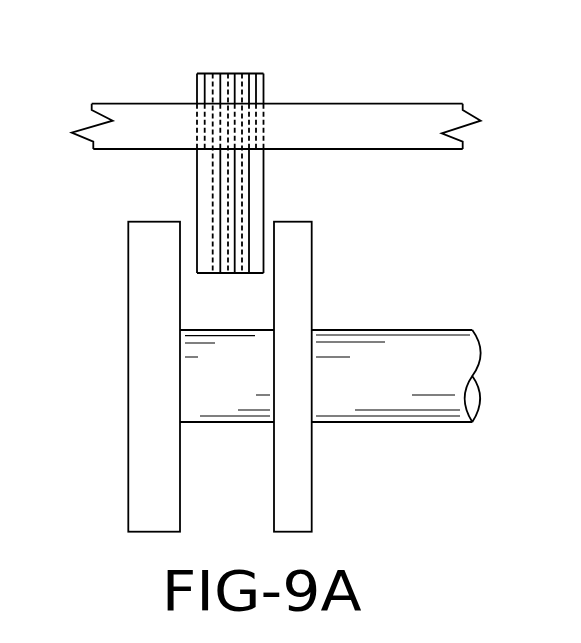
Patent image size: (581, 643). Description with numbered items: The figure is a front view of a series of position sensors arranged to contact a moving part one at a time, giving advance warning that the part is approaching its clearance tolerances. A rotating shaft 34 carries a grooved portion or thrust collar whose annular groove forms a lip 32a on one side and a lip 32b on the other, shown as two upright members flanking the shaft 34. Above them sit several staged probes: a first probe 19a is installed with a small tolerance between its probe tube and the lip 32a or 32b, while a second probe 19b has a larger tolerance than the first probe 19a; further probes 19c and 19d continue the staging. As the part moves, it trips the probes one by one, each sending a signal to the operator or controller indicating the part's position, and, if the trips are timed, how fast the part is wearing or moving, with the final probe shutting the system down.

The first probe 19a is at (255, 74).
The second probe 19b is at (235, 74).
The probe 19c is at (223, 74).
The probe 19d is at (205, 74).
The lip 32a is at (274, 257).
The lip 32b is at (180, 258).
The shaft 34 is at (393, 350).